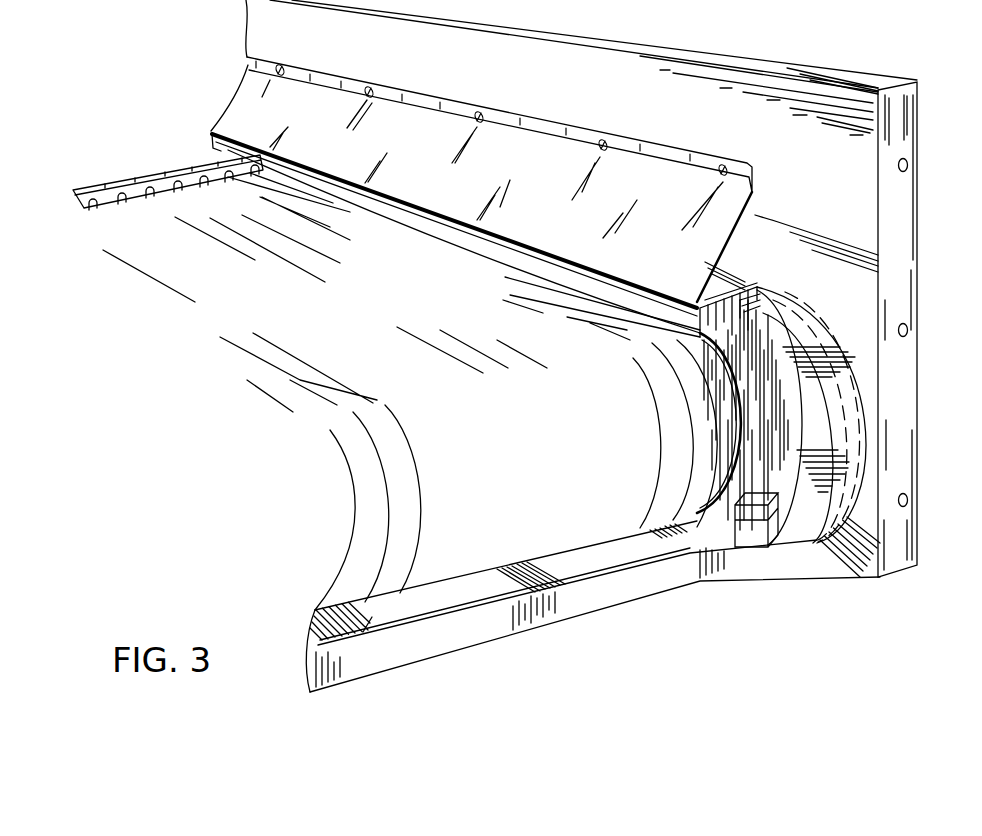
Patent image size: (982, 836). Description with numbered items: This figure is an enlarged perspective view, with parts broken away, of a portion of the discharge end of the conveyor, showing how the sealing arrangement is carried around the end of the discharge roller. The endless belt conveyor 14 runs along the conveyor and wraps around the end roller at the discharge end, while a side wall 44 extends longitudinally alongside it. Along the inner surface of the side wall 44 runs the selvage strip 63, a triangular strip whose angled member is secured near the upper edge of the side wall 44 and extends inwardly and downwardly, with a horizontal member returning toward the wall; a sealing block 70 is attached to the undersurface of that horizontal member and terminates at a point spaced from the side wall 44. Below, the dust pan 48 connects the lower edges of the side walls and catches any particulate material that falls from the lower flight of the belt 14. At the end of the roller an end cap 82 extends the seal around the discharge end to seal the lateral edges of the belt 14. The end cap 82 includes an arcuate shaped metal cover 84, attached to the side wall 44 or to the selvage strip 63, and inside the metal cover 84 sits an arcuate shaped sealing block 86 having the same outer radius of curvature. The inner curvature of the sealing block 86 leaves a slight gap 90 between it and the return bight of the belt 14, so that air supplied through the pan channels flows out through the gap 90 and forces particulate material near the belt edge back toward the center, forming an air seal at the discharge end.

The endless belt conveyor 14 is at (507, 456).
The side wall 44 is at (833, 158).
The dust pan 48 is at (620, 592).
The selvage strip 63 is at (727, 256).
The sealing block 70 is at (452, 228).
The end cap 82 is at (837, 325).
The arcuate shaped metal cover 84 is at (815, 545).
The arcuate shaped sealing block 86 is at (790, 475).
The gap 90 is at (740, 416).